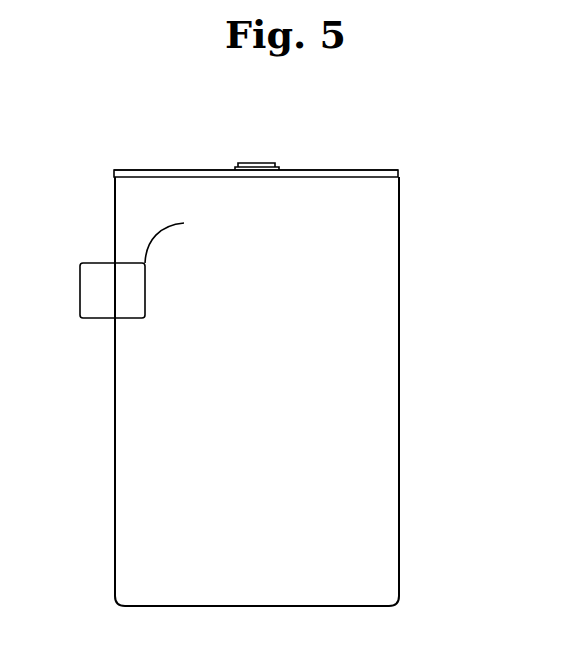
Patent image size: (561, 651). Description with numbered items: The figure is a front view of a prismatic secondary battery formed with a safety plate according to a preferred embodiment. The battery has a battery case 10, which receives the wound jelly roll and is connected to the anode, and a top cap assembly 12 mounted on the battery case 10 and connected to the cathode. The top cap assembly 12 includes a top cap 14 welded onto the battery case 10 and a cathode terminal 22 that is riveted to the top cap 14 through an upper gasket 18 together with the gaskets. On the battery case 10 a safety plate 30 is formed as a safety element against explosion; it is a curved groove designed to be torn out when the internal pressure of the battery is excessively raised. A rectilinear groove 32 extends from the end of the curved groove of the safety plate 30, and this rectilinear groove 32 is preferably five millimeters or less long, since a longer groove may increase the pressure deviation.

The battery case 10 is at (130, 494).
The top cap assembly 12 is at (336, 150).
The top cap 14 is at (152, 170).
The upper gasket 18 is at (278, 164).
The cathode terminal 22 is at (250, 163).
The safety plate 30 is at (134, 244).
The rectilinear groove 32 is at (82, 265).